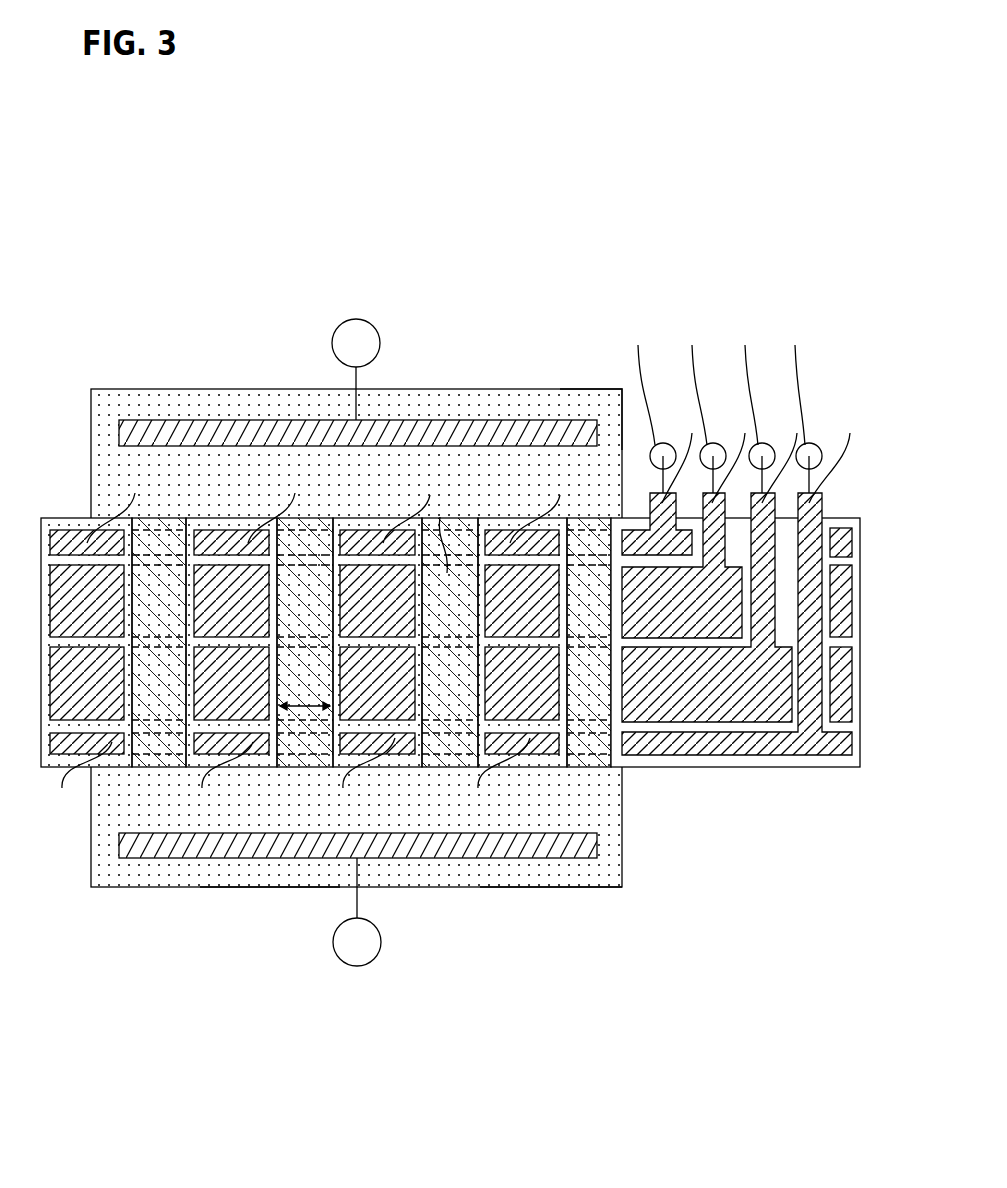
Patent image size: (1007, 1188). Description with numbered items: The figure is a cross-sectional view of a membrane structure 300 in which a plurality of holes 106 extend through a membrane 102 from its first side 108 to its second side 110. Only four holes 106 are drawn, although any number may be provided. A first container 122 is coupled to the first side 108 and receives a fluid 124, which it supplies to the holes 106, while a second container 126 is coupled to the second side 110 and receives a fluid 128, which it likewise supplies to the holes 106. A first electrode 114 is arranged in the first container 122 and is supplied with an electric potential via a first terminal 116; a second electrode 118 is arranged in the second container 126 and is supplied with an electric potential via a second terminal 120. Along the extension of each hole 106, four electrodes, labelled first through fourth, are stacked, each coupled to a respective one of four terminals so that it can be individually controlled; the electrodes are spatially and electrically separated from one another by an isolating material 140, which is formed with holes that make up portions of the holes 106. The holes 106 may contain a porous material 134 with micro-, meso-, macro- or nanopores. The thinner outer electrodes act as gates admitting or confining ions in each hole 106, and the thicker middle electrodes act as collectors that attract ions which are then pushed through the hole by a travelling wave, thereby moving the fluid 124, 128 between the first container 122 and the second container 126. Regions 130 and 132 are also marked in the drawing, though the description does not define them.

The membrane structure 300 is at (767, 218).
The membrane 102 is at (312, 515).
The hole 106 is at (167, 713).
The first side 108 is at (80, 515).
The second side 110 is at (735, 580).
The first electrode 114 is at (413, 430).
The first terminal 116 is at (357, 318).
The second electrode 118 is at (190, 858).
The second terminal 120 is at (365, 950).
The first container 122 is at (106, 388).
The fluid 124 is at (522, 408).
The second container 126 is at (530, 888).
The fluid 128 is at (292, 870).
The hatched strip 130 is at (440, 517).
The strip region 132 is at (456, 561).
The porous material 134 is at (155, 542).
The isolating material 140 is at (840, 760).